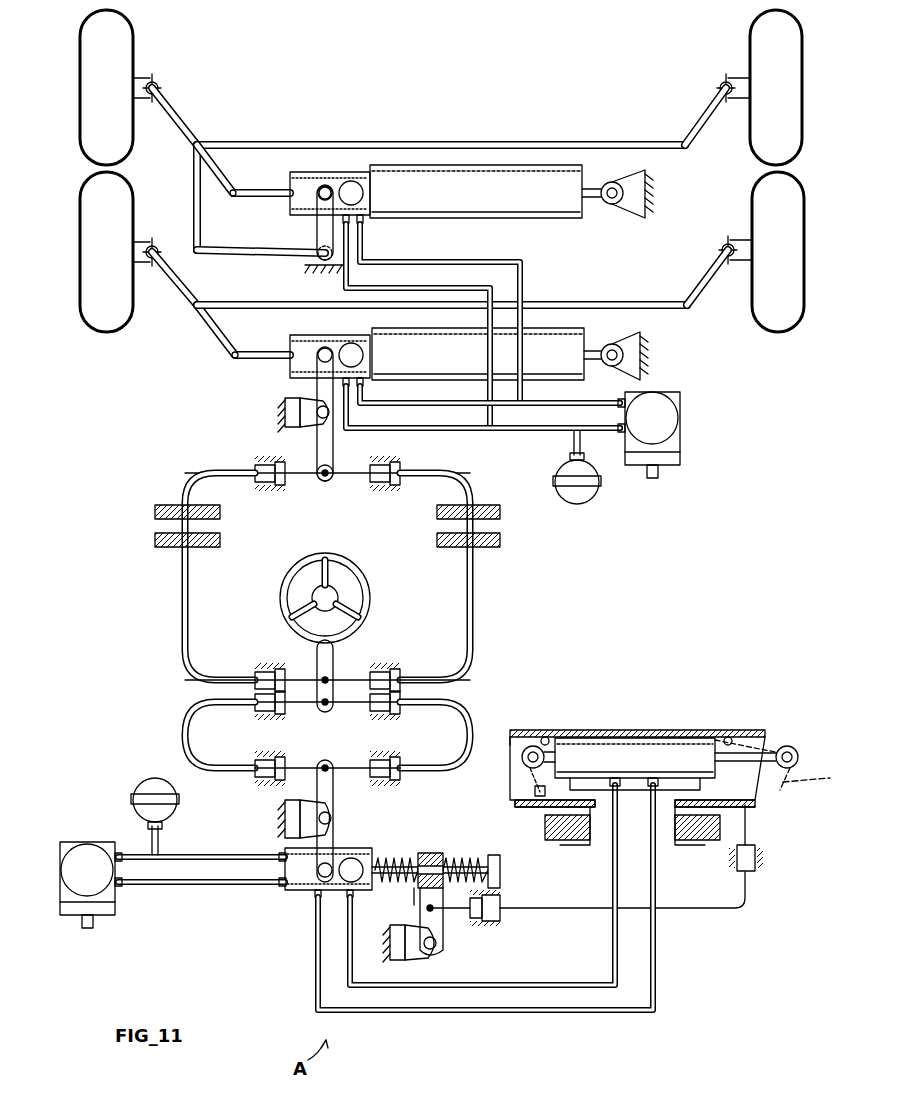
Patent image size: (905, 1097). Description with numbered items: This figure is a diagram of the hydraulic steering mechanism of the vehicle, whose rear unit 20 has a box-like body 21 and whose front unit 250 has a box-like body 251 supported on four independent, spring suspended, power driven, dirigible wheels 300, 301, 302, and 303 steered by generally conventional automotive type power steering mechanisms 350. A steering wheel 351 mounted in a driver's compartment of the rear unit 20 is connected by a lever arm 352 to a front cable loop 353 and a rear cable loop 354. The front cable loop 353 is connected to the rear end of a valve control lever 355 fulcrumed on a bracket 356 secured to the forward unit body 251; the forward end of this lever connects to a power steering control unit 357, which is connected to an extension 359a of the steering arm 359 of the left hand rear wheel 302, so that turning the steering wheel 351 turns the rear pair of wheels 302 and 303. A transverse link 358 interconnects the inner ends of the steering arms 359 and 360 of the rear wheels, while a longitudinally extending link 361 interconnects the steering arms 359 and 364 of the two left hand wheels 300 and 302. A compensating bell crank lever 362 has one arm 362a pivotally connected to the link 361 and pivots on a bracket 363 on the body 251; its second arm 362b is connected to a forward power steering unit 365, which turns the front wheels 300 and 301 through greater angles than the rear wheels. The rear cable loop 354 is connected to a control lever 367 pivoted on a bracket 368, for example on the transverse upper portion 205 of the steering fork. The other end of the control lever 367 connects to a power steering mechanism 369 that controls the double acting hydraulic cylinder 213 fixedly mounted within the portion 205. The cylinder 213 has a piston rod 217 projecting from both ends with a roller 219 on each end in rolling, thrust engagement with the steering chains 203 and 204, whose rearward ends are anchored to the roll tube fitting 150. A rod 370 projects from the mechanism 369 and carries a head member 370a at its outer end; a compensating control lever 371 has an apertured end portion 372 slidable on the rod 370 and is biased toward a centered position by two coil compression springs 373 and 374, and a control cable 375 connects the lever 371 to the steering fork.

The dirigible wheel 300 is at (90, 42).
The dirigible wheel 301 is at (790, 55).
The dirigible wheel 302 is at (100, 250).
The dirigible wheel 303 is at (793, 300).
The steering arm 364 is at (172, 110).
The longitudinally extending link 361 is at (195, 185).
The power steering mechanism 350 is at (578, 78).
The compensating bell crank lever 362 is at (252, 215).
The arm of bell crank lever 362a is at (280, 258).
The second arm of bell crank lever 362b is at (328, 235).
The bracket 363 is at (312, 272).
The forward power steering unit 365 is at (552, 218).
The steering arm 359 is at (178, 278).
The extension of steering arm 359a is at (215, 337).
The transverse link 358 is at (280, 312).
The steering arm 360 is at (708, 268).
The power steering control unit 357 is at (420, 366).
The front unit 250 is at (660, 535).
The valve control lever 355 is at (318, 436).
The bracket 356 is at (292, 412).
The front cable loop 353 is at (305, 478).
The box-like body 21 is at (165, 545).
The box-like body 251 is at (508, 507).
The steering wheel 351 is at (370, 606).
The lever arm 352 is at (335, 662).
The rear cable loop 354 is at (308, 708).
The control lever 367 is at (335, 815).
The bracket 368 is at (298, 814).
The power steering mechanism 369 is at (300, 888).
The rod 370 is at (392, 858).
The apertured end portion 372 is at (432, 852).
The coil compression spring 374 is at (485, 838).
The head member 370a is at (500, 868).
The coil compression spring 373 is at (396, 882).
The compensating control lever 371 is at (437, 930).
The control cable 375 is at (480, 915).
The double acting hydraulic cylinder 213 is at (640, 745).
The rear unit 20 is at (615, 655).
The transverse upper portion 205 is at (525, 730).
The combined roll tube and steering yoke pivot fitting 150 is at (675, 838).
The steering chain 203 is at (530, 770).
The piston rod 217 is at (578, 718).
The roller 219 is at (795, 748).
The steering chain 204 is at (814, 774).